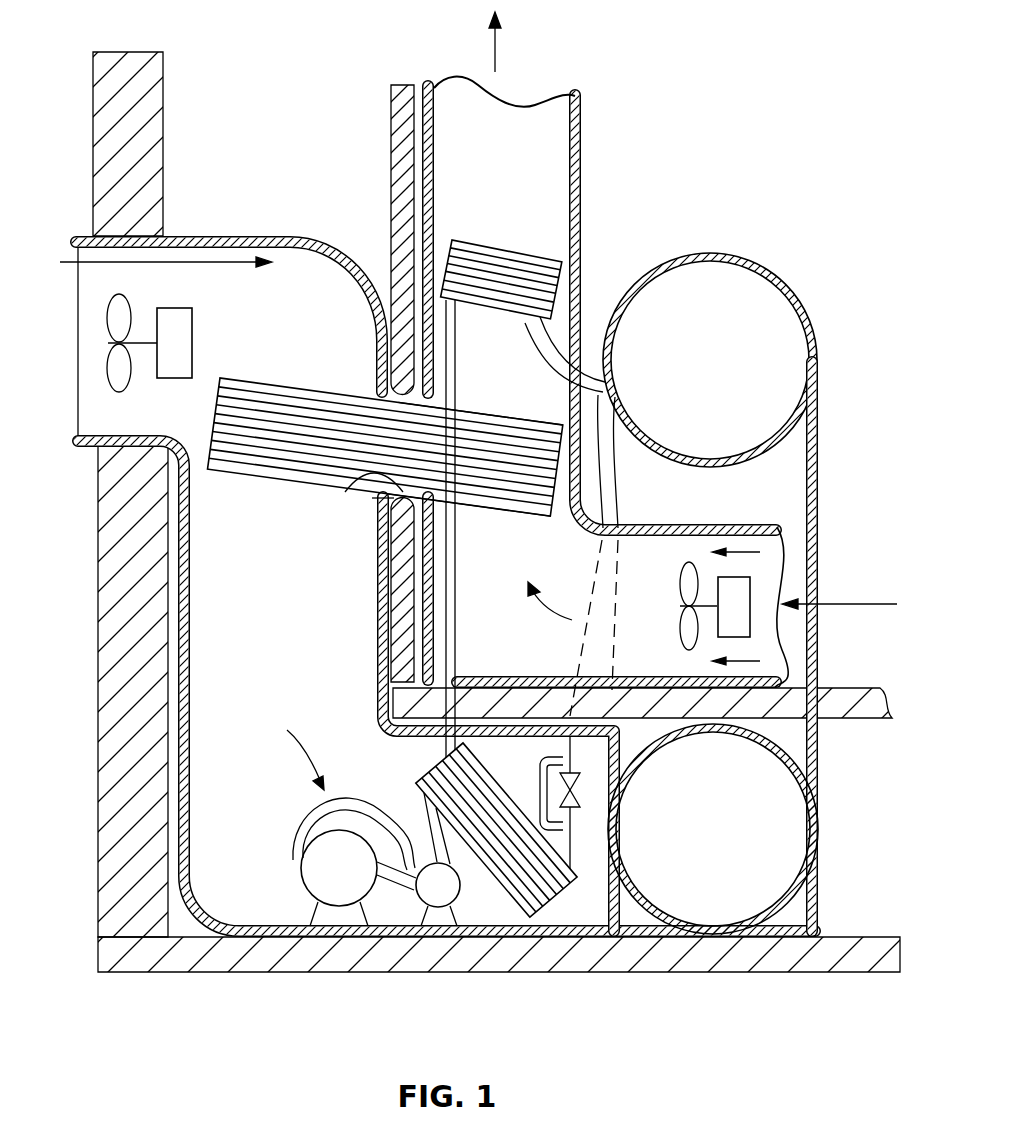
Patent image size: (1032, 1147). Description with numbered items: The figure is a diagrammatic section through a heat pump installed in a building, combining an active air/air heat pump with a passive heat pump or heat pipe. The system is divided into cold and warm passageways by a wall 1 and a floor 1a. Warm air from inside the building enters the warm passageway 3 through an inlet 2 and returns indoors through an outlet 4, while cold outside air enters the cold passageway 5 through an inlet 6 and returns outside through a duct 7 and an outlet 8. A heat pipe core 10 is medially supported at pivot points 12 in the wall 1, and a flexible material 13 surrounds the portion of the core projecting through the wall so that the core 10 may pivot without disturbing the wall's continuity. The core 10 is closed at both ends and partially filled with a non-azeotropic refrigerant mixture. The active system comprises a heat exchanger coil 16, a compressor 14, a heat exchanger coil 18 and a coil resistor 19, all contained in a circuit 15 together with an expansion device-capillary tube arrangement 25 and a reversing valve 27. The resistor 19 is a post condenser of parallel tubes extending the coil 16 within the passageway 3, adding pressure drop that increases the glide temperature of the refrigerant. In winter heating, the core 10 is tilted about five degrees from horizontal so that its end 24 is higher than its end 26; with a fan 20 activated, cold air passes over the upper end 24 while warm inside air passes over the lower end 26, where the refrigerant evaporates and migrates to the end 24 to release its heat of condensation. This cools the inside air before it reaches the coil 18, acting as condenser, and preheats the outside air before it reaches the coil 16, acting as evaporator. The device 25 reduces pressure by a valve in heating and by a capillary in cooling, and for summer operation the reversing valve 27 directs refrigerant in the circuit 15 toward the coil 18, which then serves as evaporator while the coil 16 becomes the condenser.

The wall 1 is at (393, 112).
The floor 1a is at (832, 720).
The inlet 2 is at (783, 558).
The passageway 3 is at (632, 646).
The outlet 4 is at (548, 125).
The passageway 5 is at (224, 758).
The inlet 6 is at (97, 440).
The duct 7 is at (702, 848).
The outlet 8 is at (728, 256).
The heat pipe core 10 is at (516, 425).
The pivot points 12 is at (347, 487).
The flexible material 13 is at (378, 500).
The compressor 14 is at (322, 876).
The circuit 15 is at (292, 835).
The heat exchanger coil 16 is at (550, 905).
The heat exchanger coil 18 is at (528, 253).
The coil resistor 19 is at (552, 333).
The fan 20 is at (138, 386).
The end 24 is at (385, 464).
The expansion device-capillary tube arrangement 25 is at (578, 818).
The end 26 is at (547, 520).
The reversing valve 27 is at (437, 892).